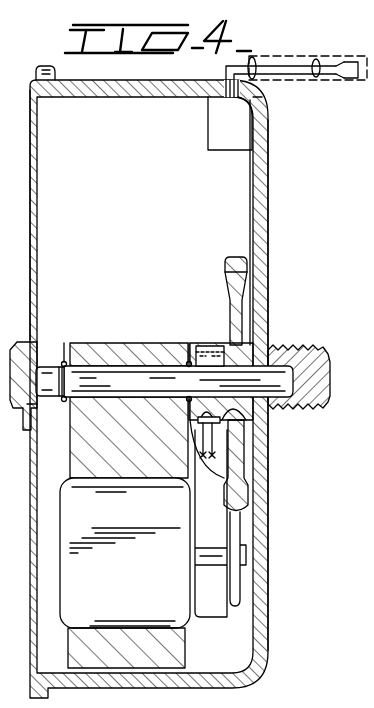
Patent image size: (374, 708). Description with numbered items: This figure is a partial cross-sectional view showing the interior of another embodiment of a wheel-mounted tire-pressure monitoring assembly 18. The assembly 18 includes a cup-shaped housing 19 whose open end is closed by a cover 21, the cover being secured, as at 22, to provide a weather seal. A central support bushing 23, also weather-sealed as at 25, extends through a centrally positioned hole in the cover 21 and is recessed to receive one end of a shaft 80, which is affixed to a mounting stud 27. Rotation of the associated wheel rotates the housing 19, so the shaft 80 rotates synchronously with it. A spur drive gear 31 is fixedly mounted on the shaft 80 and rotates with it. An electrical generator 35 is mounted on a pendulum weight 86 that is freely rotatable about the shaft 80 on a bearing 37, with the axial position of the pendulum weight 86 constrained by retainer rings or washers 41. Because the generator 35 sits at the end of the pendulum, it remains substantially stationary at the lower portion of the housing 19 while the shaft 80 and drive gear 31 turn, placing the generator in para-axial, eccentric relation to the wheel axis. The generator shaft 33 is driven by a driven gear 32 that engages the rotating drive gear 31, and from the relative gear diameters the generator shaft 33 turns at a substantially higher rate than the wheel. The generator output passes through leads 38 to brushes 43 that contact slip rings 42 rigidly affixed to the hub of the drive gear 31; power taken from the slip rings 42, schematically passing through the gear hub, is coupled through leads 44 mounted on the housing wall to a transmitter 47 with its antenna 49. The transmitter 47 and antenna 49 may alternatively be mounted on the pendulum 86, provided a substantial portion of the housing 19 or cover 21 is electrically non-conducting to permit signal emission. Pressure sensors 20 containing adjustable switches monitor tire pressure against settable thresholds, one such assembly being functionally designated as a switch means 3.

The switch means 3 is at (338, 72).
The assembly 18 is at (100, 150).
The housing 19 is at (268, 156).
The pressure sensors 20 is at (337, 56).
The cover 21 is at (37, 278).
The securing (weather seal) 22 is at (56, 72).
The central support bushing 23 is at (40, 408).
The weather seal 25 is at (27, 348).
The mounting stud 27 is at (298, 350).
The spur drive gear 31 is at (228, 262).
The driven gear 32 is at (238, 607).
The generator shaft 33 is at (210, 562).
The electrical generator 35 is at (111, 578).
The bearing 37 is at (130, 344).
The leads 38 is at (232, 470).
The retainer rings or washers 41 is at (63, 361).
The slip rings 42 is at (200, 346).
The brushes 43 is at (213, 445).
The leads 44 is at (250, 198).
The transmitter 47 is at (222, 134).
The antenna 49 is at (262, 96).
The shaft 80 is at (116, 388).
The pendulum weight 86 is at (70, 655).